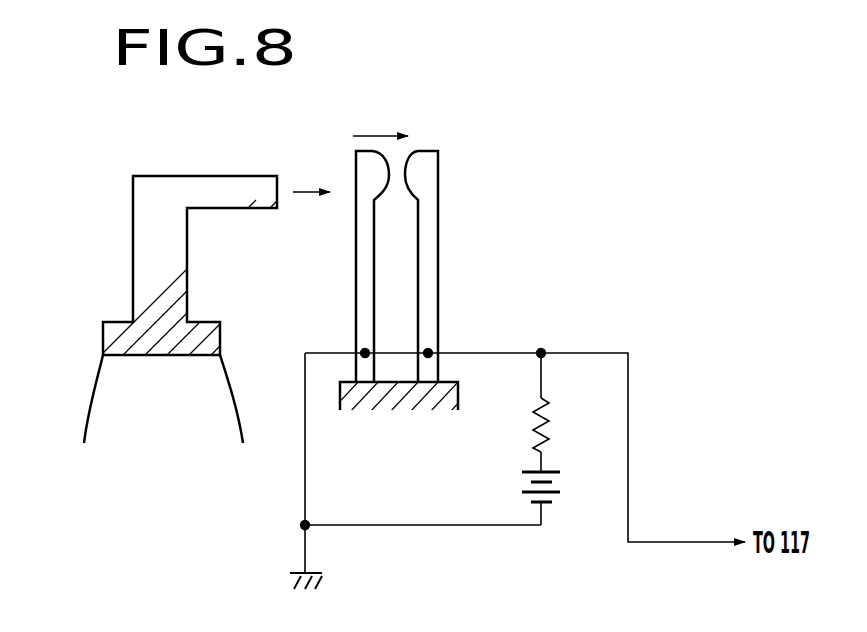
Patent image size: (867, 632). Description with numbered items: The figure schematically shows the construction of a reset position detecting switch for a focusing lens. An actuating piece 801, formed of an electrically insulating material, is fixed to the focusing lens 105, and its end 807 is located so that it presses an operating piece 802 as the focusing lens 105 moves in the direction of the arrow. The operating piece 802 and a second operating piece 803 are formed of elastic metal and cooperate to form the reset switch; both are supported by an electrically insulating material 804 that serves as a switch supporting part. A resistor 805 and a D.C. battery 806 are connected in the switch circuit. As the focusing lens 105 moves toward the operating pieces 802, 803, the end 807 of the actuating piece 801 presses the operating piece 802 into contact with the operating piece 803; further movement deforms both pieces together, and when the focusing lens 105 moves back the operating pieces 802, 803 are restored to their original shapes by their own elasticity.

The actuating piece 801 is at (133, 237).
The focusing lens 105 is at (110, 393).
The end 807 is at (279, 191).
The operating piece 802 is at (362, 288).
The operating piece 803 is at (428, 268).
The electrically insulating material 804 is at (397, 400).
The resistor 805 is at (550, 425).
The D.C. battery 806 is at (562, 482).